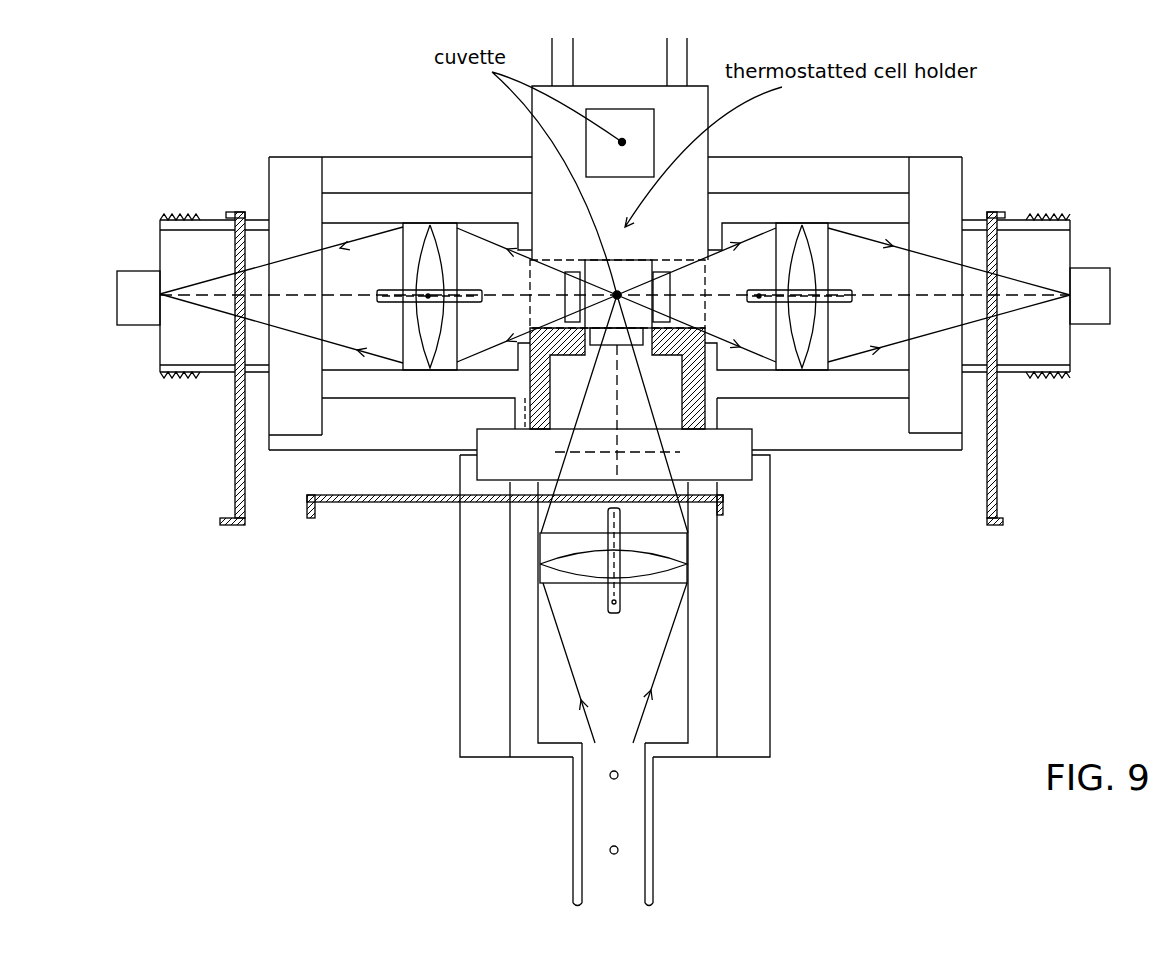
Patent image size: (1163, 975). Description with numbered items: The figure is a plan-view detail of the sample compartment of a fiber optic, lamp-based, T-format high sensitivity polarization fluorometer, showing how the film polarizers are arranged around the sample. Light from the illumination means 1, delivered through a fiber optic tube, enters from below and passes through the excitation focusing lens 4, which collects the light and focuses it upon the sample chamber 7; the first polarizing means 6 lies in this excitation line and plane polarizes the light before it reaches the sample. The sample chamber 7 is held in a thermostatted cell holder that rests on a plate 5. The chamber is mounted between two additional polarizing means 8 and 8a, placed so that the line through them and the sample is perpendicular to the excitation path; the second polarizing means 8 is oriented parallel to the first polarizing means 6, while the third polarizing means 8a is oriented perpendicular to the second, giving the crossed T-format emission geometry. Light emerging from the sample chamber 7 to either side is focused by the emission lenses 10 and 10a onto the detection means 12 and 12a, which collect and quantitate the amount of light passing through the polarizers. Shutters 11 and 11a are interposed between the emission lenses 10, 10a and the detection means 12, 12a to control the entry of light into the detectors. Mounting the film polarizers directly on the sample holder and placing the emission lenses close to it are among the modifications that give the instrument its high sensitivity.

The illumination means 1 is at (693, 905).
The excitation focusing lens 4 is at (593, 565).
The base plate 5 is at (732, 462).
The first polarizing means 6 is at (617, 295).
The sample chamber 7 is at (631, 266).
The second polarizing means 8 is at (617, 295).
The third polarizing means 8a is at (617, 295).
The emission lens 10 is at (803, 270).
The emission lens 10a is at (428, 258).
The shutter 11 is at (1002, 258).
The shutter 11a is at (240, 252).
The detection means 12 is at (1092, 305).
The detection means 12a is at (142, 310).